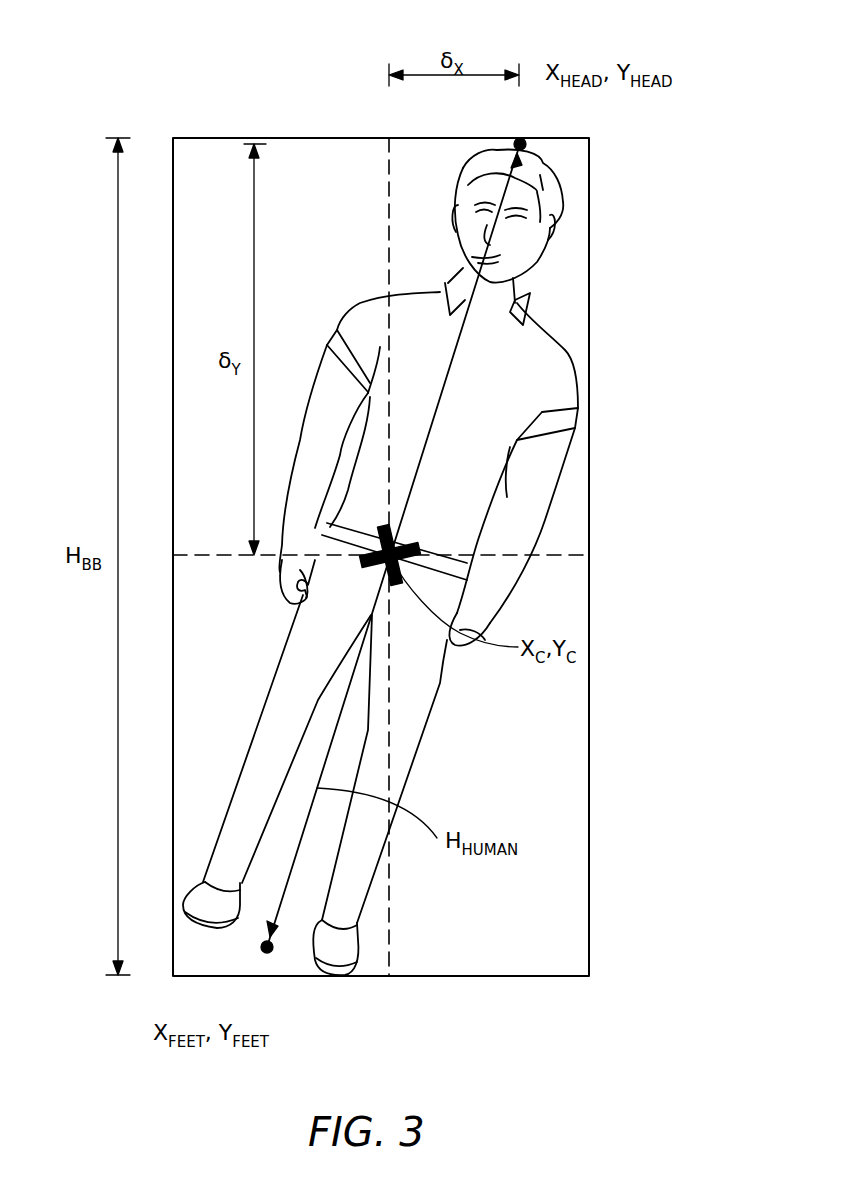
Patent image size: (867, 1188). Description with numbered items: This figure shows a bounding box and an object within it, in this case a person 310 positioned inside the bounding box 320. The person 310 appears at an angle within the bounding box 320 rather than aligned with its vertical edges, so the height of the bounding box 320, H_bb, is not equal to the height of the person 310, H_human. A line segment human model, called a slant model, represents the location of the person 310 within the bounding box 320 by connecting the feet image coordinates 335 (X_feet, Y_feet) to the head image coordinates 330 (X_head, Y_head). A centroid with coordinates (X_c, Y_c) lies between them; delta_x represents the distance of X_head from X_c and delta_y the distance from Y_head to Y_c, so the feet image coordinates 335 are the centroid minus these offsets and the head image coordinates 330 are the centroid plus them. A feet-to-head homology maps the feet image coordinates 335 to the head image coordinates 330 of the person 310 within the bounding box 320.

The person 310 is at (437, 685).
The bounding box 320 is at (589, 733).
The head image coordinates 330 is at (520, 140).
The feet image coordinates 335 is at (267, 952).